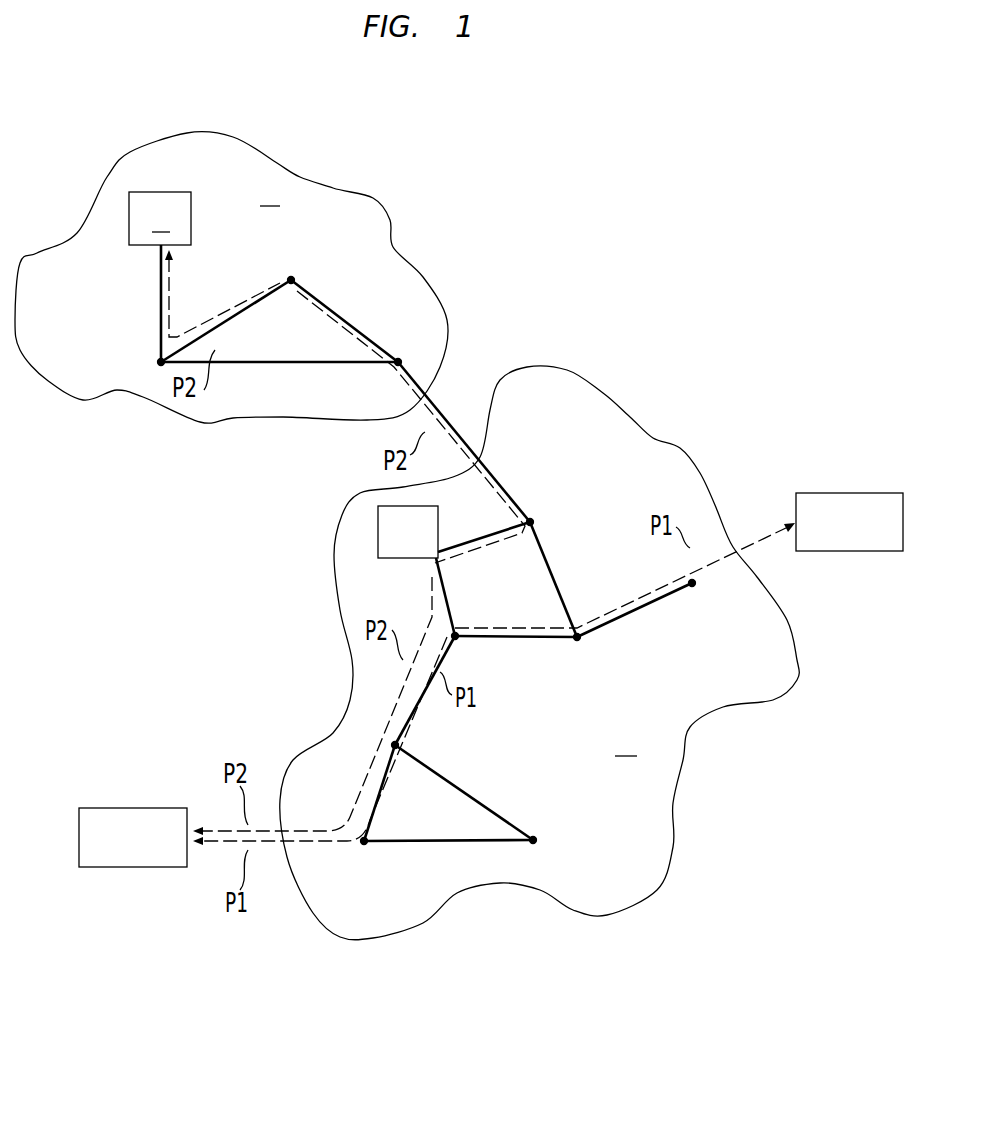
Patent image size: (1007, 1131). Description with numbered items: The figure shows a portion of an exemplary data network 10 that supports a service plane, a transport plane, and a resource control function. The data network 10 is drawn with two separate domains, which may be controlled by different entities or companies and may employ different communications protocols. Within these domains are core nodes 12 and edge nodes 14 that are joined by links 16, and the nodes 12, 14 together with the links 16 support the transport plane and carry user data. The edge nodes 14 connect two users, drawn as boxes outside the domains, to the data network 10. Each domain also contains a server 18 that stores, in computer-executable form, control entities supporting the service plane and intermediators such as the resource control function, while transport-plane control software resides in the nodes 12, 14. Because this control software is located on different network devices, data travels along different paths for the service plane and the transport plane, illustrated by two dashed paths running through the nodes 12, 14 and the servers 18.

The data network 10 is at (132, 580).
The core node 12 is at (288, 278).
The edge node 14 is at (392, 368).
The link 16 is at (160, 315).
The server 18 is at (393, 562).